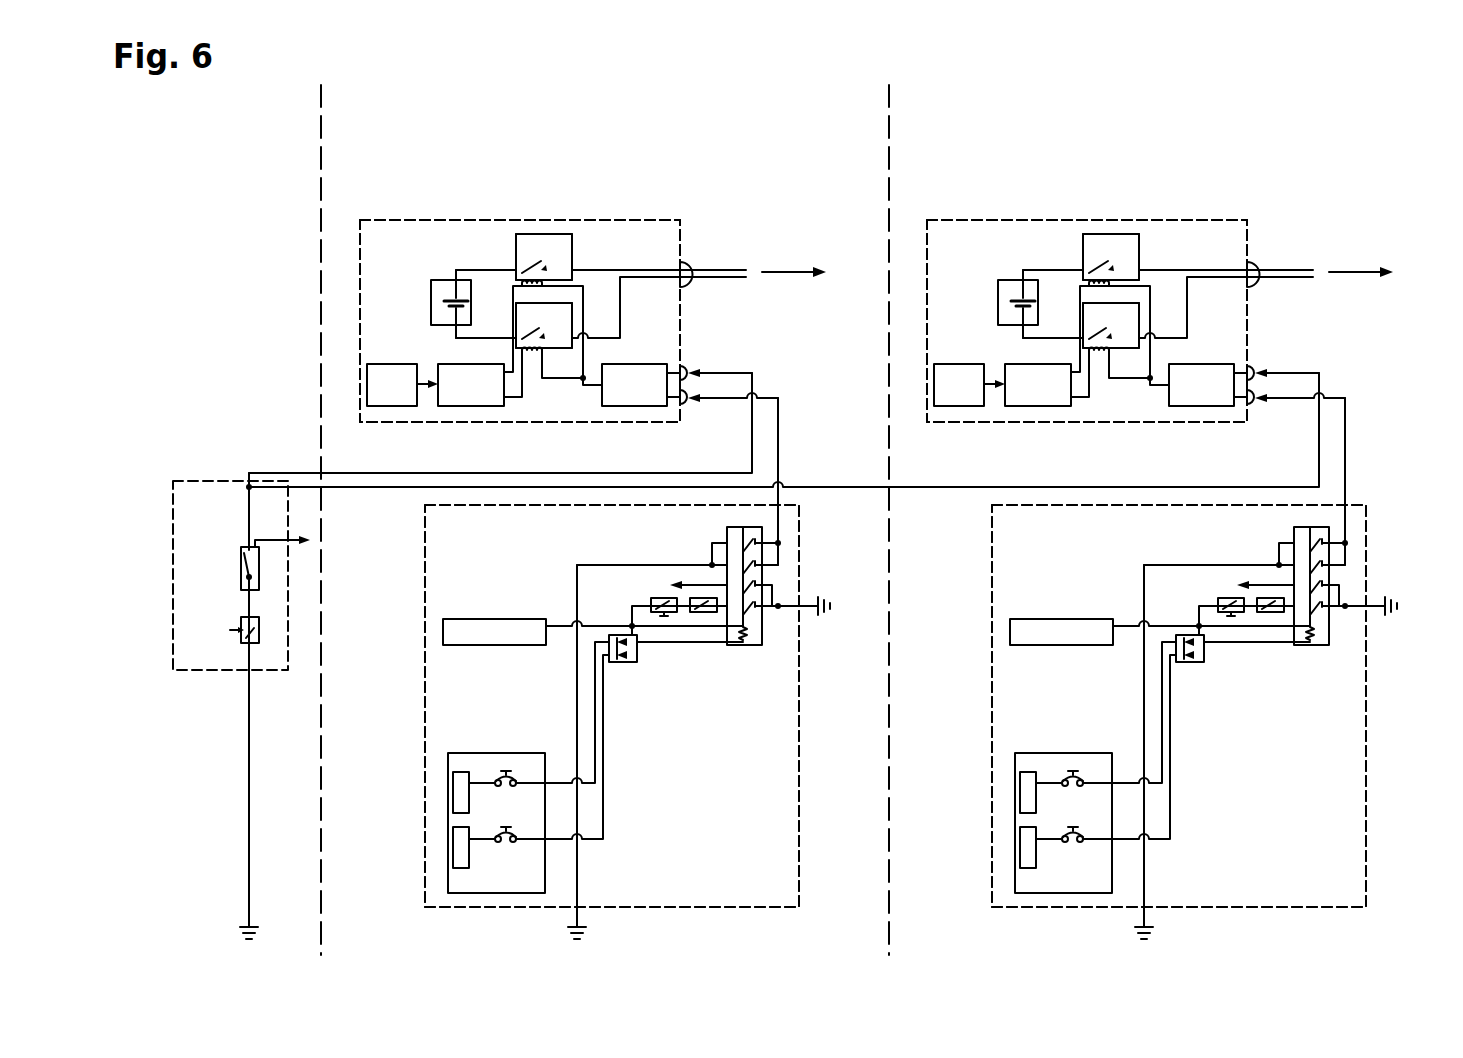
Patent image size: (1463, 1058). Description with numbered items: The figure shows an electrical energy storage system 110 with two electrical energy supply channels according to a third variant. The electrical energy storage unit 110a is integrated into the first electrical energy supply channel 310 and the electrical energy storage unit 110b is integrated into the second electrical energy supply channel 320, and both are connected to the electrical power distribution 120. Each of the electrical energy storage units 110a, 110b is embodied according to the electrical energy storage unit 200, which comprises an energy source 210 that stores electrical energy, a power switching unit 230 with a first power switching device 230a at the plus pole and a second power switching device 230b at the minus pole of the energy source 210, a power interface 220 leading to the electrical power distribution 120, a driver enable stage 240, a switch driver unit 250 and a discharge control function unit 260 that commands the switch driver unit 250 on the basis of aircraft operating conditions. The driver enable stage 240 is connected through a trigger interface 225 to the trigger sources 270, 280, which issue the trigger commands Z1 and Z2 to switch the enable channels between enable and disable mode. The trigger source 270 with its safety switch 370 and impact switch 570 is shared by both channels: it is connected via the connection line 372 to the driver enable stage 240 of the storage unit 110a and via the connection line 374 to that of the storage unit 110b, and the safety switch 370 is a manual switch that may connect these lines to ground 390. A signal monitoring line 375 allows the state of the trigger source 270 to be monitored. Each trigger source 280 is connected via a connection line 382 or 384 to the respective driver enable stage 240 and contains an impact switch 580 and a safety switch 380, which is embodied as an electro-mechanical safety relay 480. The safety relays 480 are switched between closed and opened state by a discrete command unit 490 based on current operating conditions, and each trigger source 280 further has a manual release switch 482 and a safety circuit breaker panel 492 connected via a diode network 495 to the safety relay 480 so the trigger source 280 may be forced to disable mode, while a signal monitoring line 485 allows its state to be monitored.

The electrical energy storage system 110 is at (245, 163).
The electrical energy storage unit 110a is at (449, 220).
The electrical energy storage unit 110b is at (1016, 220).
The electrical energy storage unit 200 is at (803, 321).
The energy source 210 is at (438, 280).
The power interface 220 is at (690, 250).
The trigger interface 225 is at (692, 355).
The power switching unit 230 is at (546, 222).
The first power switching device 230a is at (573, 253).
The second power switching device 230b is at (553, 350).
The driver enable stage 240 is at (636, 406).
The switch driver unit 250 is at (471, 406).
The discharge control function unit 260 is at (392, 406).
The trigger source 270 is at (207, 672).
The trigger source 280 is at (425, 867).
The first electrical energy supply channel 310 is at (666, 176).
The second electrical energy supply channel 320 is at (1233, 176).
The safety switch 370 is at (241, 570).
The connection line 372 is at (277, 473).
The connection line 374 is at (306, 487).
The signal monitoring line 375 is at (279, 542).
The safety switch 380 is at (760, 661).
The connection line 382 is at (778, 437).
The connection line 384 is at (1345, 437).
The ground 390 is at (226, 939).
The safety relay 480 is at (727, 531).
The manual release switch 482 is at (651, 600).
The signal monitoring line 485 is at (690, 585).
The discrete command unit 490 is at (475, 619).
The safety circuit breaker panel 492 is at (472, 752).
The diode network 495 is at (632, 663).
The impact switch 570 is at (241, 625).
The impact switch 580 is at (703, 623).
The trigger command Z1 is at (1003, 359).
The trigger command Z2 is at (1016, 437).
The electrical power distribution 120 is at (1090, 304).